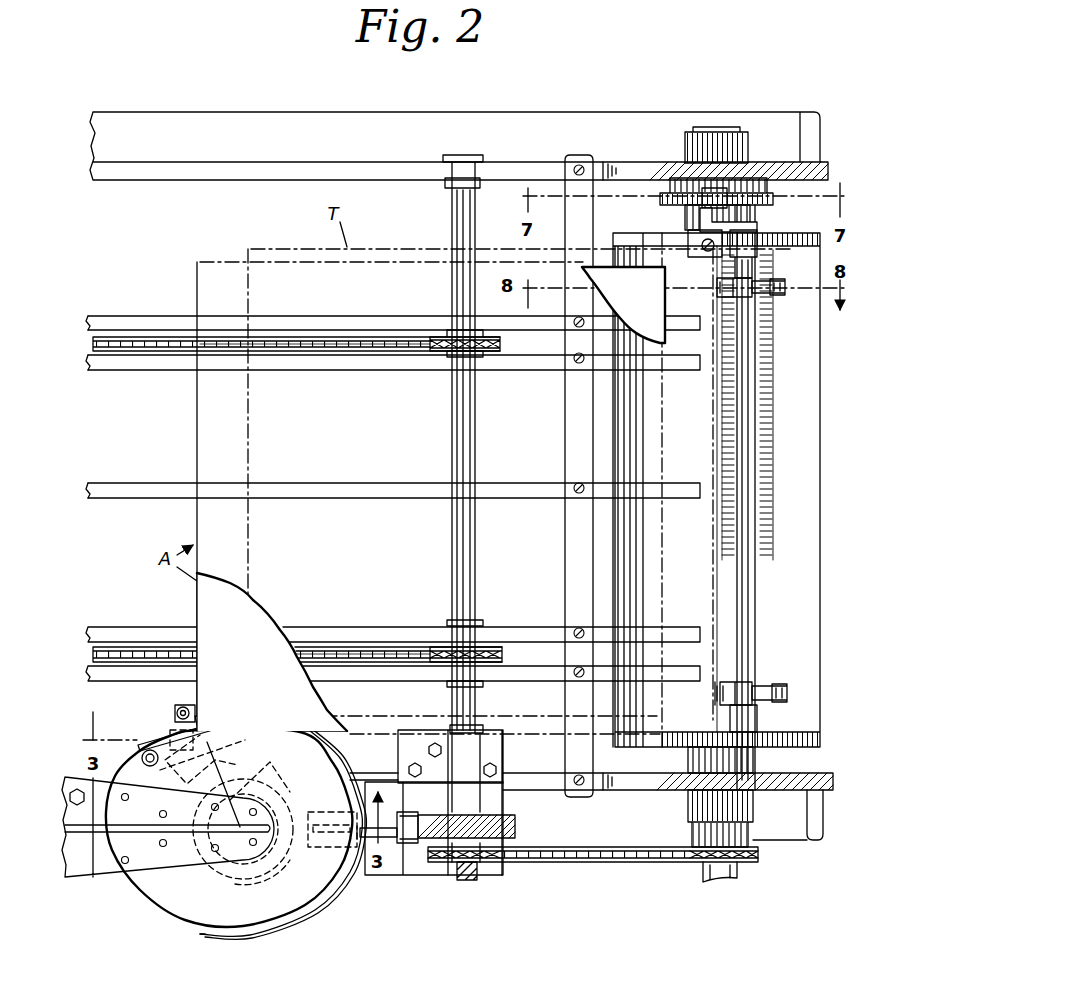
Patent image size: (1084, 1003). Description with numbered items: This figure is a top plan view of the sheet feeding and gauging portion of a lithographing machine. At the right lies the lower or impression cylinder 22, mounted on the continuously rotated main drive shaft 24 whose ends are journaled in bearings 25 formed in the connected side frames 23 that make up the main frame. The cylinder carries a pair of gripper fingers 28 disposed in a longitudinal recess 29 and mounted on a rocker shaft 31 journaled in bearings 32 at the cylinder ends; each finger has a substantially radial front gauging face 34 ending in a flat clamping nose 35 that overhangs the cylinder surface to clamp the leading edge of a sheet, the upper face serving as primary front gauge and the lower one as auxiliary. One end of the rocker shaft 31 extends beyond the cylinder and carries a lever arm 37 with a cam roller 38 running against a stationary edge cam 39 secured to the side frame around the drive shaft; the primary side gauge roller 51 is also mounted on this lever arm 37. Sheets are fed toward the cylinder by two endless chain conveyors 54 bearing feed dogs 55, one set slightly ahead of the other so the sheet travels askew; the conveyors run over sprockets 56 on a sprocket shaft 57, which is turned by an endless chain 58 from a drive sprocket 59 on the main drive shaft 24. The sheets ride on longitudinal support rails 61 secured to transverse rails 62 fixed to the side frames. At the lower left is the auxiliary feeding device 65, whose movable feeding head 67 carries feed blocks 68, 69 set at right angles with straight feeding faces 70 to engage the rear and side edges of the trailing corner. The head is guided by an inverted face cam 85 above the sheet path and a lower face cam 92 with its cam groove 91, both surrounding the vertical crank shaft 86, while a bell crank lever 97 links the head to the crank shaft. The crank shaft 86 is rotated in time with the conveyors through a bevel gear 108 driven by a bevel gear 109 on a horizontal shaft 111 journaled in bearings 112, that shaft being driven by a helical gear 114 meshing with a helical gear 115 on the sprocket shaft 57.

The impression cylinder 22 is at (792, 535).
The side frames 23 is at (772, 168).
The main drive shaft 24 is at (735, 875).
The bearings 25 is at (700, 140).
The gripper fingers 28 is at (755, 290).
The longitudinal recess 29 is at (790, 402).
The rocker shaft 31 is at (745, 500).
The bearings 32 is at (752, 253).
The front gauging face 34 is at (715, 290).
The clamping nose 35 is at (718, 700).
The lever arm 37 is at (687, 218).
The cam roller 38 is at (703, 190).
The stationary edge cam 39 is at (683, 200).
The primary side gauge roller 51 is at (703, 253).
The endless chain conveyors 54 is at (340, 345).
The feed dogs 55 is at (195, 345).
The sprockets 56 is at (483, 350).
The sprocket shaft 57 is at (457, 218).
The endless chain 58 is at (590, 862).
The drive sprocket 59 is at (690, 862).
The support rails 61 is at (395, 360).
The transverse rails 62 is at (572, 427).
The auxiliary feeding device 65 is at (263, 937).
The feeding head 67 is at (160, 735).
The feed block 68 is at (182, 708).
The feed block 69 is at (240, 738).
The feeding faces 70 is at (198, 718).
The inverted face cam 85 is at (160, 893).
The crank shaft 86 is at (215, 868).
The cam groove 91 is at (303, 925).
The lower face cam 92 is at (235, 934).
The bell crank lever 97 is at (245, 755).
The bevel gear 108 is at (245, 885).
The bevel gear 109 is at (288, 805).
The horizontal shaft 111 is at (385, 828).
The bearings 112 is at (412, 840).
The helical gear 114 is at (467, 882).
The helical gear 115 is at (515, 825).